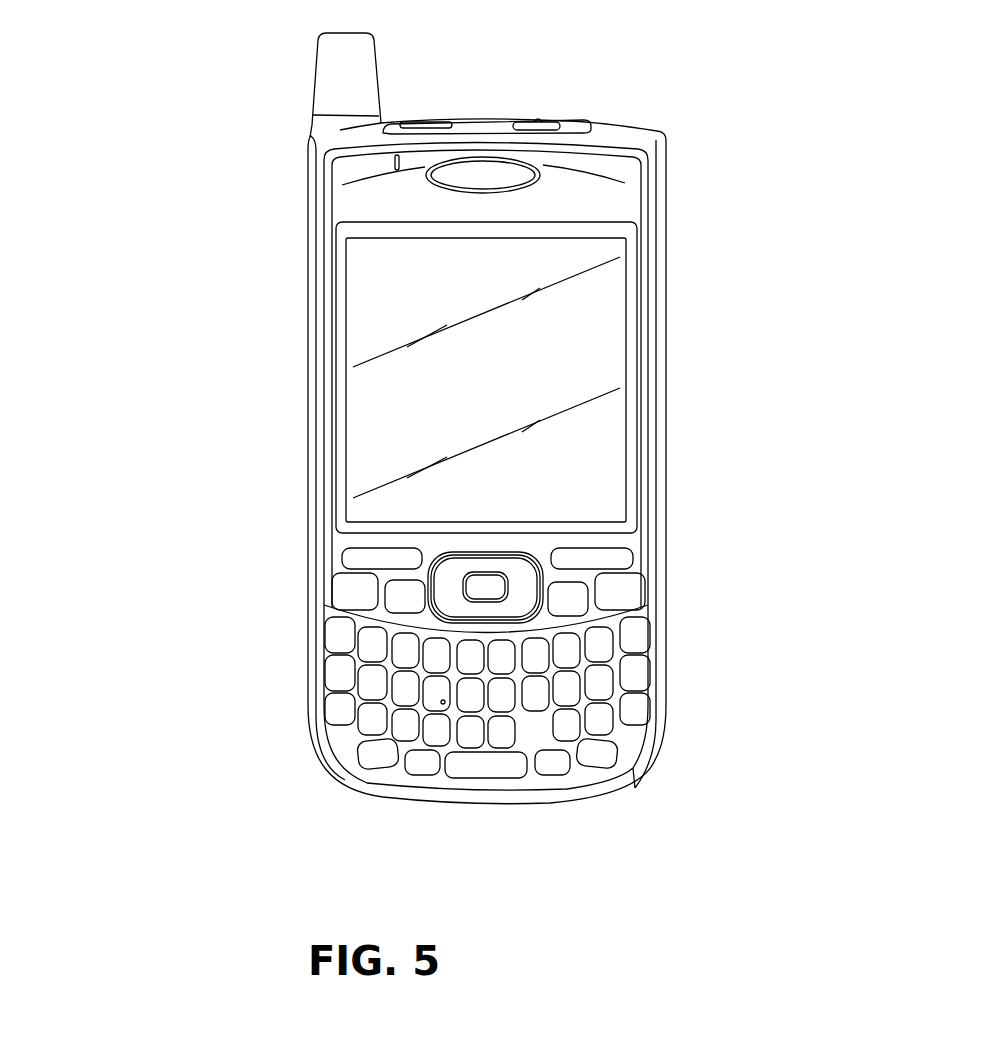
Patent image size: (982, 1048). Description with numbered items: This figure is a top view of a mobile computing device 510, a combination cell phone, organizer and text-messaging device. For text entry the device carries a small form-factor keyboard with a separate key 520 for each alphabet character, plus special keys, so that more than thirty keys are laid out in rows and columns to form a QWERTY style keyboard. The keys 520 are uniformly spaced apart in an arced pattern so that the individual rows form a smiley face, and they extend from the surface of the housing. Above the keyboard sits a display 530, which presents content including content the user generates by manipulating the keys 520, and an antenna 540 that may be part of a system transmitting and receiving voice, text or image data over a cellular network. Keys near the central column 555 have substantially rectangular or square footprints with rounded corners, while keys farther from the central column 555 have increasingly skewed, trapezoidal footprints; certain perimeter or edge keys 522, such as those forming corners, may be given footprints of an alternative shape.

The mobile computing device 510 is at (203, 453).
The keys 520 is at (471, 705).
The perimeter or edge keys 522 is at (332, 707).
The display 530 is at (478, 353).
The antenna 540 is at (345, 88).
The central column 555 is at (505, 733).